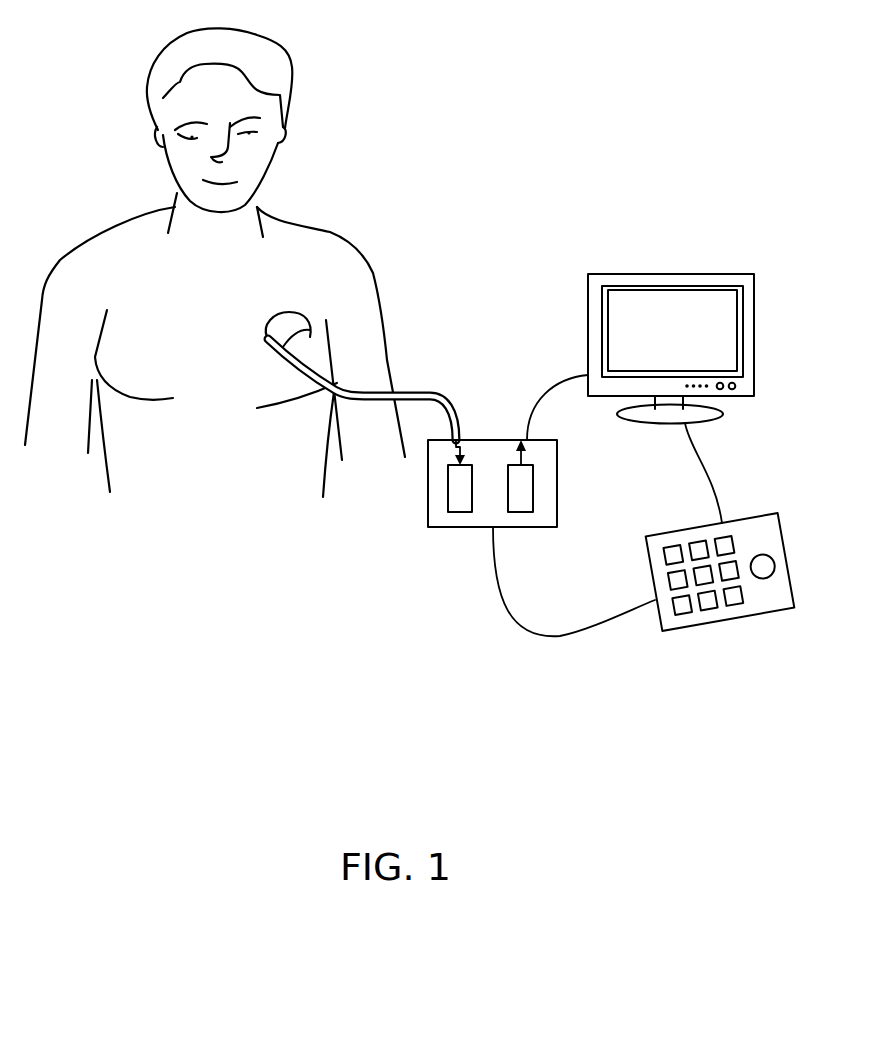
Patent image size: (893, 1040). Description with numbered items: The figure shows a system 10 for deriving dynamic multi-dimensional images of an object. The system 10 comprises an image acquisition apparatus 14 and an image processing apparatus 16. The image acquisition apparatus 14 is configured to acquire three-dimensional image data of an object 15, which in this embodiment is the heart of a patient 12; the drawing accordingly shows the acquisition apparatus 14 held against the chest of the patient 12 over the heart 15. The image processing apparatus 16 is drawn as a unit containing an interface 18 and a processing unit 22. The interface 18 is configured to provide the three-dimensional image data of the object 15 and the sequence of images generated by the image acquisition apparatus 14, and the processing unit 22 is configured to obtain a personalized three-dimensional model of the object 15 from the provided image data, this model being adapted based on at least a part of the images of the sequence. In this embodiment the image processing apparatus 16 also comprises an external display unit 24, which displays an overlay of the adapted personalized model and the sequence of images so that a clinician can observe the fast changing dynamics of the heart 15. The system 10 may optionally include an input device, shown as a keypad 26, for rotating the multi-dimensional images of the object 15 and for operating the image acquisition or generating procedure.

The system 10 is at (628, 142).
The patient 12 is at (340, 260).
The image acquisition apparatus 14 is at (307, 310).
The object 15 is at (315, 313).
The image processing apparatus 16 is at (557, 492).
The interface 18 is at (460, 512).
The processing unit 22 is at (523, 512).
The external display unit 24 is at (676, 286).
The user interface keypad 26 is at (716, 627).